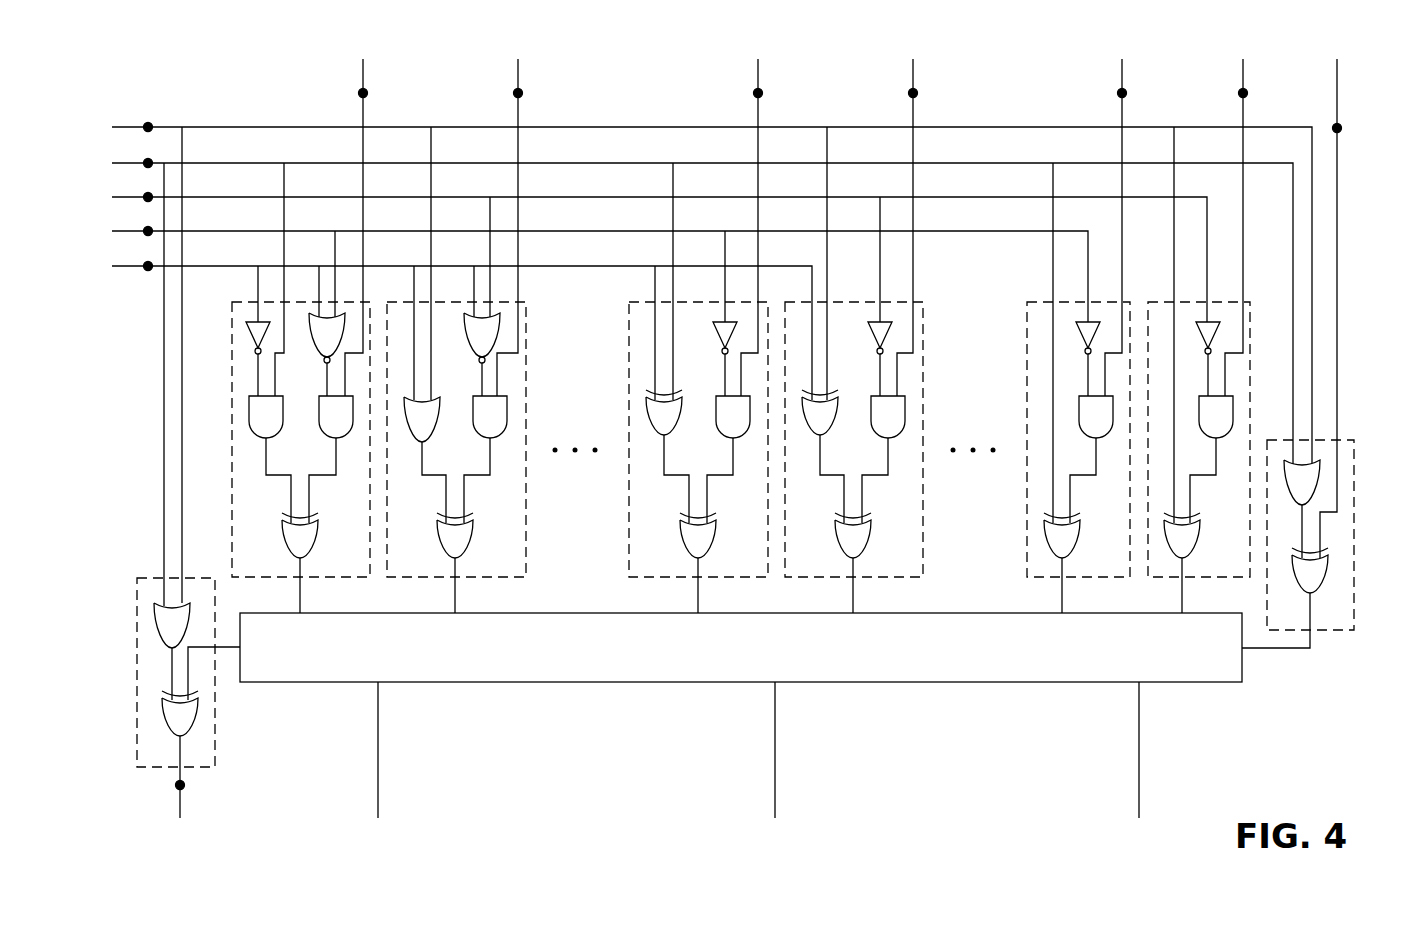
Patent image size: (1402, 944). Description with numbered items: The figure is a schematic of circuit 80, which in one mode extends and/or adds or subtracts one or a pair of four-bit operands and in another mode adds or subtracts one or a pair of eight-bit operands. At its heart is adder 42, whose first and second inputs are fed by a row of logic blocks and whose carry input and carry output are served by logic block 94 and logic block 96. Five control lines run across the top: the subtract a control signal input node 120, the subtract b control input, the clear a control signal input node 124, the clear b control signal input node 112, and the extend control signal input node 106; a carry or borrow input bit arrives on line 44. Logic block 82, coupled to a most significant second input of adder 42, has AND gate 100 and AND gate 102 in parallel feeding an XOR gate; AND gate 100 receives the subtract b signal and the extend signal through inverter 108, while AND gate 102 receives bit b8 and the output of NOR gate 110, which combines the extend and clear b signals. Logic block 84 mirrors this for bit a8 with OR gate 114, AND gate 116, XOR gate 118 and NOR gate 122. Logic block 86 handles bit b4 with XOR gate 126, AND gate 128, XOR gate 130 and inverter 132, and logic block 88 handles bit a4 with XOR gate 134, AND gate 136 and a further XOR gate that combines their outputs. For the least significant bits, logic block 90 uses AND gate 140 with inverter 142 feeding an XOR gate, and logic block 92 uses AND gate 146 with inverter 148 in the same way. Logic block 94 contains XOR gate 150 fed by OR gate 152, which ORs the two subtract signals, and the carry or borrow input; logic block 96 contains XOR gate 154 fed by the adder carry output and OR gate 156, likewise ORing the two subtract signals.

The circuit 80 is at (248, 84).
The adder 42 is at (795, 657).
The carry/borrow input line 44 is at (1346, 130).
The subtract a control signal input node 120 is at (153, 130).
The clear a control signal input node 124 is at (153, 200).
The clear b control signal input node 112 is at (153, 234).
The extend control signal input node 106 is at (153, 269).
The logic block 82 is at (368, 566).
The control logic block 84 is at (523, 566).
The logic block 86 is at (764, 566).
The logic block 88 is at (921, 566).
The logic block 90 is at (1128, 571).
The logic block 92 is at (1248, 571).
The logic block 94 is at (1351, 619).
The logic block 96 is at (169, 757).
The AND gate 100 is at (255, 442).
The AND gate 102 is at (343, 442).
The inverter 108 is at (247, 335).
The NOR gate 110 is at (310, 340).
The OR gate 114 is at (411, 446).
The AND gate 116 is at (497, 442).
The XOR gate 118 is at (442, 546).
The NOR gate 122 is at (465, 340).
The XOR gate 126 is at (652, 446).
The AND gate 128 is at (740, 442).
The XOR gate 130 is at (683, 546).
The inverter 132 is at (719, 337).
The XOR gate 134 is at (808, 446).
The AND gate 136 is at (895, 442).
The AND gate 140 is at (1098, 442).
The inverter 142 is at (1090, 318).
The AND gate 146 is at (1218, 442).
The inverter 148 is at (1210, 318).
The XOR gate 150 is at (1328, 573).
The OR gate 152 is at (1318, 463).
The XOR gate 154 is at (162, 708).
The OR gate 156 is at (153, 605).